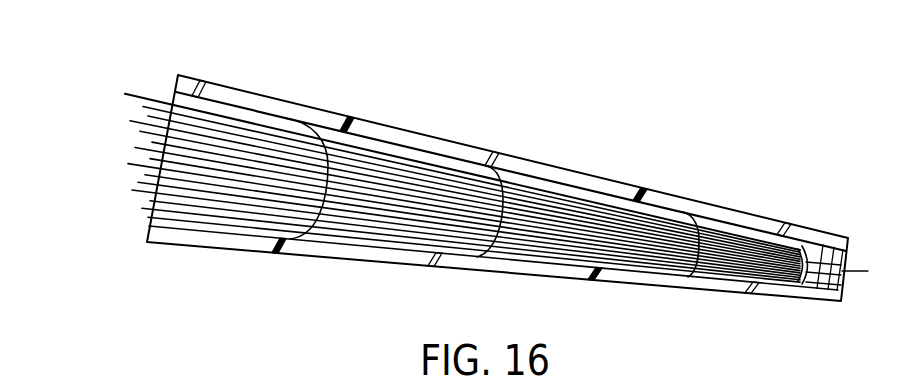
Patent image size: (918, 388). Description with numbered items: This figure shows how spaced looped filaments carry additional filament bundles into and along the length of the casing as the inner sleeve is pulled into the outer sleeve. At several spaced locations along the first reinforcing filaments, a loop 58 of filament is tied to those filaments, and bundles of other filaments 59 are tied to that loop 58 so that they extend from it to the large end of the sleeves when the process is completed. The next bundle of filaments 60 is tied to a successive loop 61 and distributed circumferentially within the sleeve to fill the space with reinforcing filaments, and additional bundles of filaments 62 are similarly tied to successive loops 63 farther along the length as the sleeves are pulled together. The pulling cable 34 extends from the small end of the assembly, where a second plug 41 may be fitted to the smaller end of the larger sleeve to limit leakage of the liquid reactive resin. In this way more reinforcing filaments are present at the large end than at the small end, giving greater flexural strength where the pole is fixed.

The additional bundles of filaments 62 is at (177, 100).
The next bundle of filaments 60 is at (143, 106).
The bundles of other filaments 59 is at (150, 159).
The successive loops 63 is at (328, 195).
The successive loop 61 is at (492, 244).
The loop 58 is at (691, 278).
The second plug 41 is at (870, 214).
The pulling cable 34 is at (868, 279).